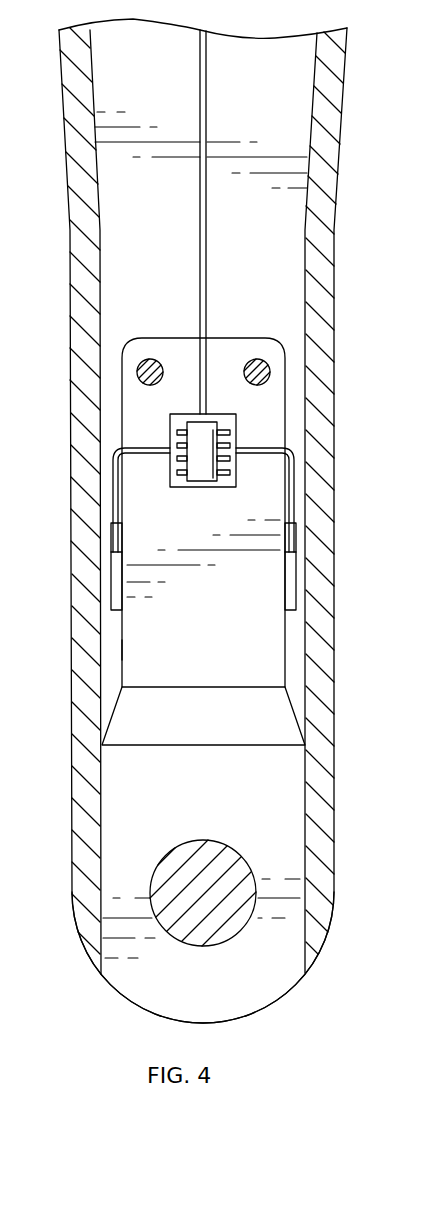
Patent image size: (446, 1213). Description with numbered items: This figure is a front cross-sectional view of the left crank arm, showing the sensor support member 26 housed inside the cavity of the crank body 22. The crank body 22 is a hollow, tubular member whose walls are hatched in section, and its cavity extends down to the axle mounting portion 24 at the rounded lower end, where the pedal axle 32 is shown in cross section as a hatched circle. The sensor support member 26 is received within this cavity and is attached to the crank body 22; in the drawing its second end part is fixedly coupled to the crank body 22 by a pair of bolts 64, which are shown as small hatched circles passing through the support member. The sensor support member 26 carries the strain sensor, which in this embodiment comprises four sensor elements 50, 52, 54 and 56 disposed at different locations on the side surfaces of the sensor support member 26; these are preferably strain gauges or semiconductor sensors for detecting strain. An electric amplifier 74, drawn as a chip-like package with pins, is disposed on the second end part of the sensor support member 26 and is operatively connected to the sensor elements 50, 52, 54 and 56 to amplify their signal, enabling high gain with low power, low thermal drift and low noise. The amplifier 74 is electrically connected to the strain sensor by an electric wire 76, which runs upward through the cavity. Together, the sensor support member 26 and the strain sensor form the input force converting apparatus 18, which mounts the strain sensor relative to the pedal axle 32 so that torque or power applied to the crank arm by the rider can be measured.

The input force converting apparatus 18 is at (121, 650).
The crank body 22 is at (335, 541).
The axle mounting portion 24 is at (328, 932).
The sensor support member 26 is at (285, 651).
The pedal axle 32 is at (187, 880).
The sensor element 50 is at (296, 582).
The sensor element 52 is at (295, 498).
The sensor element 54 is at (110, 580).
The sensor element 56 is at (110, 497).
The bolt 64 is at (146, 360).
The electric amplifier 74 is at (207, 488).
The electric wire 76 is at (208, 90).